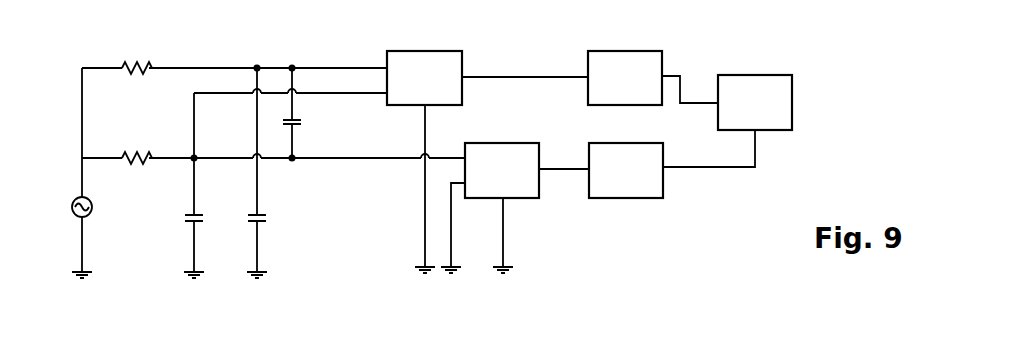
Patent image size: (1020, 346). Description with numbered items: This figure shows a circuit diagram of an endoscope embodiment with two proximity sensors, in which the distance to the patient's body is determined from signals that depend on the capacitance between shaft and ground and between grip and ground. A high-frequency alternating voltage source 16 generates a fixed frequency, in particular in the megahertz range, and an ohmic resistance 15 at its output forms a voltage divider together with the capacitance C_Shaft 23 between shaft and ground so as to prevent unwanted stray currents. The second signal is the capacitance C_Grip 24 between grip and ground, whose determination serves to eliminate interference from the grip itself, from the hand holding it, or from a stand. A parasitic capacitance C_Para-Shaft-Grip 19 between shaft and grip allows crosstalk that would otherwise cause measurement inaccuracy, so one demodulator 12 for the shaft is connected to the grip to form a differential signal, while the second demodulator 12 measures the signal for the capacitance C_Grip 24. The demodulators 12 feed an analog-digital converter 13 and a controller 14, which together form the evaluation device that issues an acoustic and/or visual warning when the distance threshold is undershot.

The demodulator 12 is at (463, 124).
The analog-digital converter 13 is at (625, 124).
The controller 14 is at (755, 102).
The ohmic resistance 15 is at (136, 95).
The high-frequency alternating voltage source 16 is at (60, 212).
The parasitic capacitance C_Para-Shaft-Grip 19 is at (310, 127).
The capacitance C_Shaft 23 is at (278, 222).
The capacitance C_Grip 24 is at (175, 220).